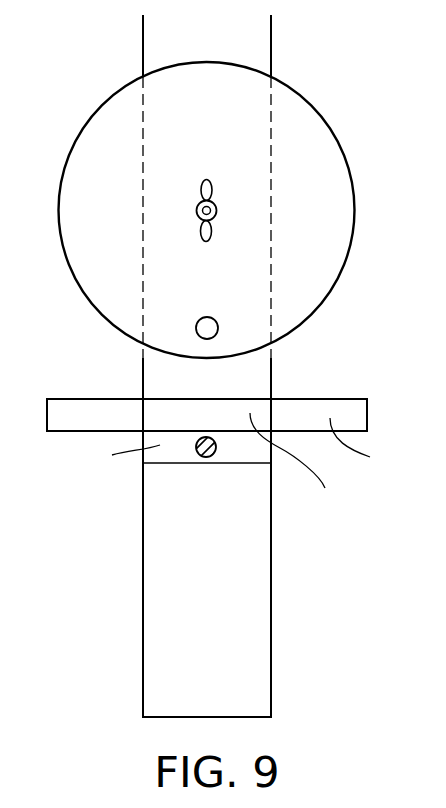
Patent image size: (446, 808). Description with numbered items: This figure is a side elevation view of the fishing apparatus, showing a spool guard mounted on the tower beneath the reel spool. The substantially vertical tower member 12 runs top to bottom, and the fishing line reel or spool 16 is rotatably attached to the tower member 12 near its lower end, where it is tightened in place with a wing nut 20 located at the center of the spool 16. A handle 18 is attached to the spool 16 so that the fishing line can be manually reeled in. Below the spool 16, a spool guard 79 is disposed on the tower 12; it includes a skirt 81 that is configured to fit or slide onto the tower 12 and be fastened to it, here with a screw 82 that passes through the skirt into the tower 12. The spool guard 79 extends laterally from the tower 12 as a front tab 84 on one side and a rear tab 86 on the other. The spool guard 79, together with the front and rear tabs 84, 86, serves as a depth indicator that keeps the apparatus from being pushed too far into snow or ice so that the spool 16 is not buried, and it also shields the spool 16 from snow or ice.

The tower member 12 is at (177, 598).
The fishing line reel or spool 16 is at (315, 181).
The handle 18 is at (218, 323).
The wing nut 20 is at (196, 210).
The spool guard 79 is at (294, 464).
The skirt 81 is at (117, 457).
The screw 82 is at (207, 458).
The front tab 84 is at (365, 444).
The rear tab 86 is at (86, 412).